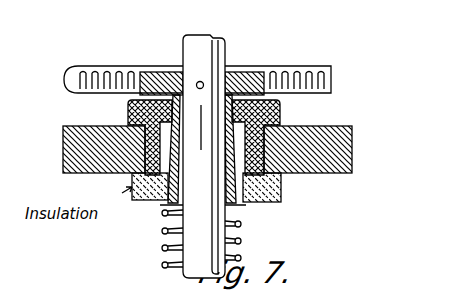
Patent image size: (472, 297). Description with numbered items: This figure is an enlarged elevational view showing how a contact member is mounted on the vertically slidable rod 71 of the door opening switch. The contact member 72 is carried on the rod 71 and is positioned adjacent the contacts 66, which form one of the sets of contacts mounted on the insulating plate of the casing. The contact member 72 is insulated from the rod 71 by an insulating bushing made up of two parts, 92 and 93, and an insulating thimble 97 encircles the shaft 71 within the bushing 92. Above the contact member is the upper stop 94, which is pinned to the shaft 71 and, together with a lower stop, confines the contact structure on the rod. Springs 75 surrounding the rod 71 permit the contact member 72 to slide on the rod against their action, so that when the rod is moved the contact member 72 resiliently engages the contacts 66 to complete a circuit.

The contacts 66 is at (339, 77).
The upper stop 94 is at (155, 66).
The insulating bushing part 93 is at (289, 111).
The contact member 72 is at (57, 161).
The insulating bushing part 92 is at (283, 183).
The insulating thimble 97 is at (162, 205).
The vertically slidable rod 71 is at (204, 156).
The springs 75 is at (252, 242).